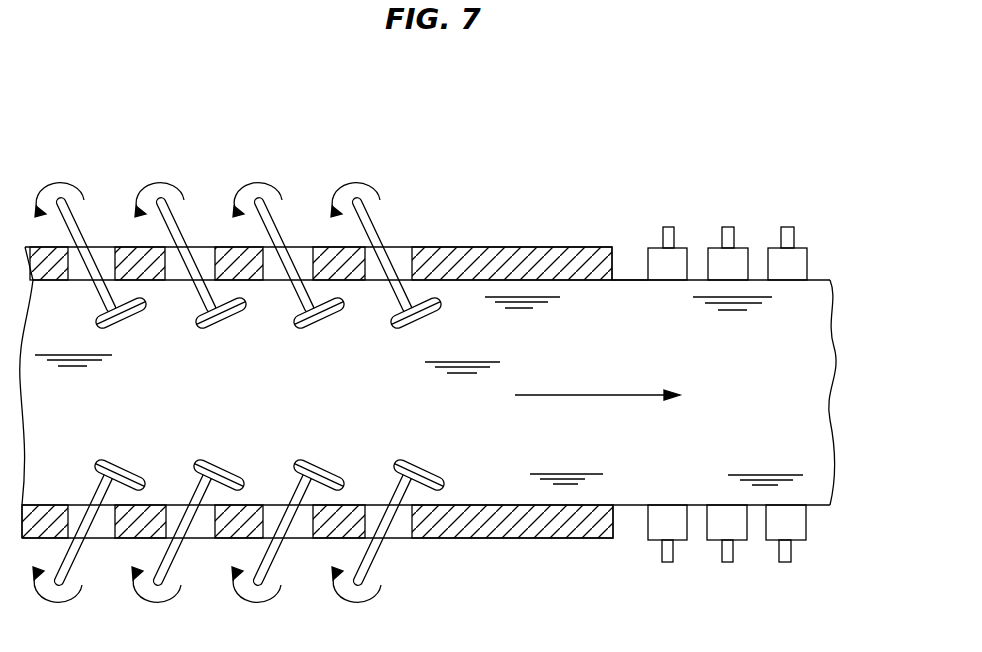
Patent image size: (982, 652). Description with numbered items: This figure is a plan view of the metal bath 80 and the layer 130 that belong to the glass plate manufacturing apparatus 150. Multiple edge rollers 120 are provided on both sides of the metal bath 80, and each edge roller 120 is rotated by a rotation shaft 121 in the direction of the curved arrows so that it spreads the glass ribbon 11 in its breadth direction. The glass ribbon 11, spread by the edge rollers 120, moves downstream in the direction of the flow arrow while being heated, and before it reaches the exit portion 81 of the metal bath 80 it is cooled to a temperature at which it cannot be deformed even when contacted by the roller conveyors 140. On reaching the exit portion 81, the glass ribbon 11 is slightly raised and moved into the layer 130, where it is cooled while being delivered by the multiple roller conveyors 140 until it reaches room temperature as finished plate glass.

The glass ribbon 11 is at (577, 293).
The metal bath 80 is at (512, 258).
The exit portion 81 is at (633, 262).
The edge roller 120 is at (222, 325).
The rotation shaft 121 is at (177, 232).
The layer 130 is at (762, 230).
The roller conveyor 140 is at (658, 527).
The glass plate manufacturing apparatus 150 is at (730, 338).